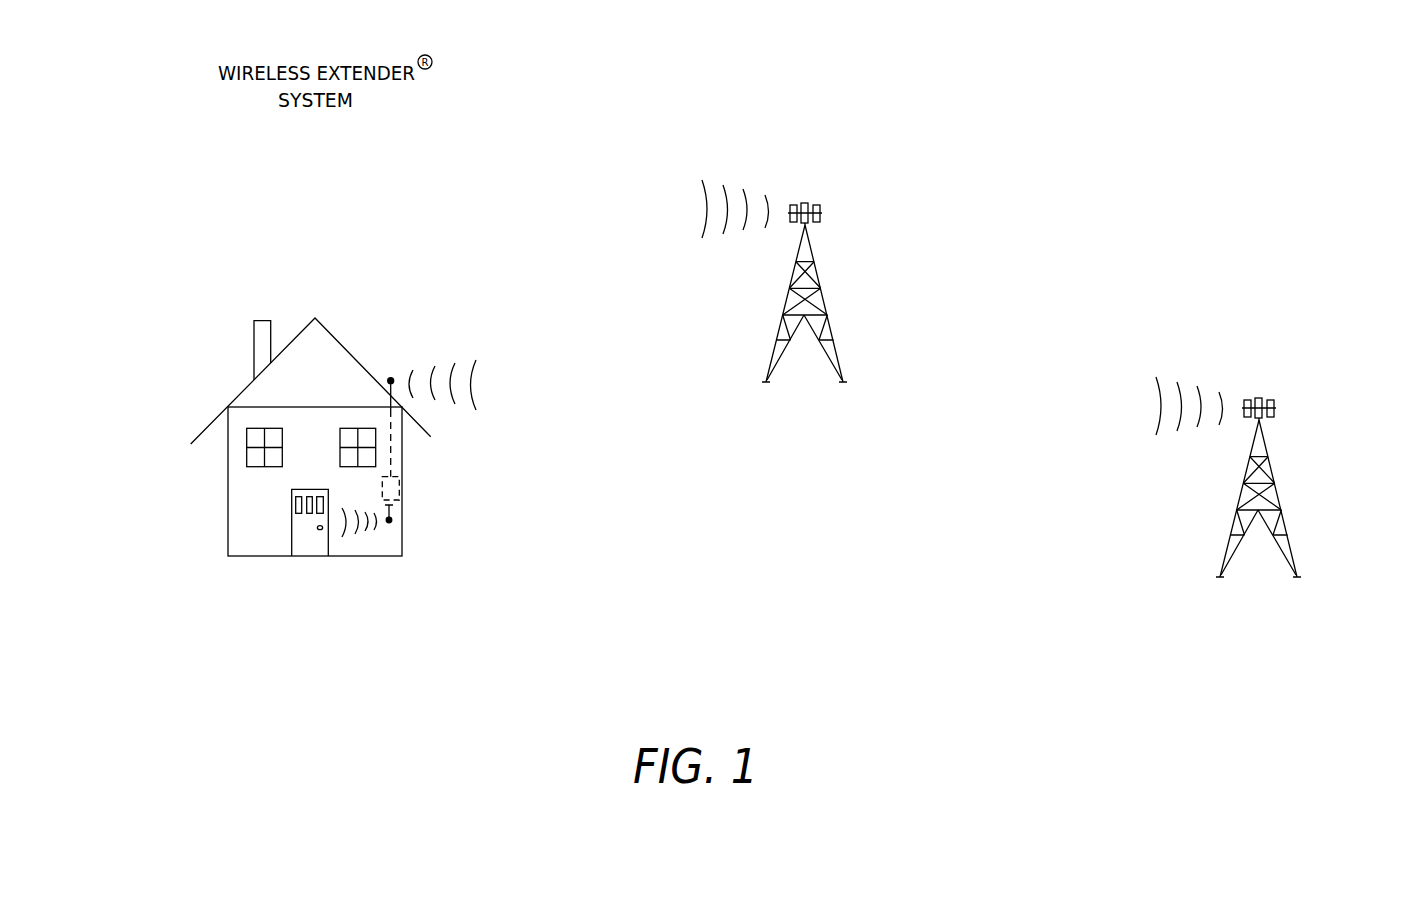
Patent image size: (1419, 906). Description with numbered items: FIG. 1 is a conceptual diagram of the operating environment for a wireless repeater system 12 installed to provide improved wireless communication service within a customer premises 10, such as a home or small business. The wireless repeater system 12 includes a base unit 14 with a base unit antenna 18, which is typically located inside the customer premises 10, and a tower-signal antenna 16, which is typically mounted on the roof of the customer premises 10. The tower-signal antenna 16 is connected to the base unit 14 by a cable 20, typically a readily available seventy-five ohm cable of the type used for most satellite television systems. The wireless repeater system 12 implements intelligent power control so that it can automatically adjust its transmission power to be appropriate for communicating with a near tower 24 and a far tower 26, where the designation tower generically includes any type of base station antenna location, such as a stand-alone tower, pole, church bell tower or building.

The customer premises 10 is at (227, 527).
The wireless repeater system 12 is at (557, 497).
The base unit 14 is at (413, 490).
The tower-signal antenna 16 is at (402, 355).
The base unit antenna 18 is at (412, 522).
The cable 20 is at (413, 447).
The near tower 24 is at (828, 318).
The far tower 26 is at (1275, 471).